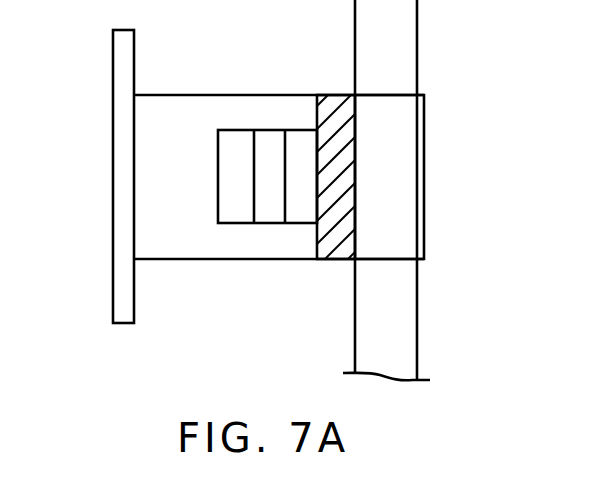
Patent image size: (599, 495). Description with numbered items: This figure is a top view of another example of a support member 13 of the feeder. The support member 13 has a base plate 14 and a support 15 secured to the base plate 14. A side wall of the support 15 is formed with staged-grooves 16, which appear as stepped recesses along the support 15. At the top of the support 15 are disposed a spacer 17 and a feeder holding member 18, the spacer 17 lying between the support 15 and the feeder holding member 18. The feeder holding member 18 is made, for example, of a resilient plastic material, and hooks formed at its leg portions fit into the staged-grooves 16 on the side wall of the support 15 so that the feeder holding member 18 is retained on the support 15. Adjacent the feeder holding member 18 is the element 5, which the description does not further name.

The support member 13 is at (202, 25).
The base plate 14 is at (118, 293).
The support 15 is at (247, 246).
The staged-grooves 16 is at (270, 143).
The spacer 17 is at (333, 250).
The feeder holding member 18 is at (415, 182).
The shaft 5 is at (413, 50).